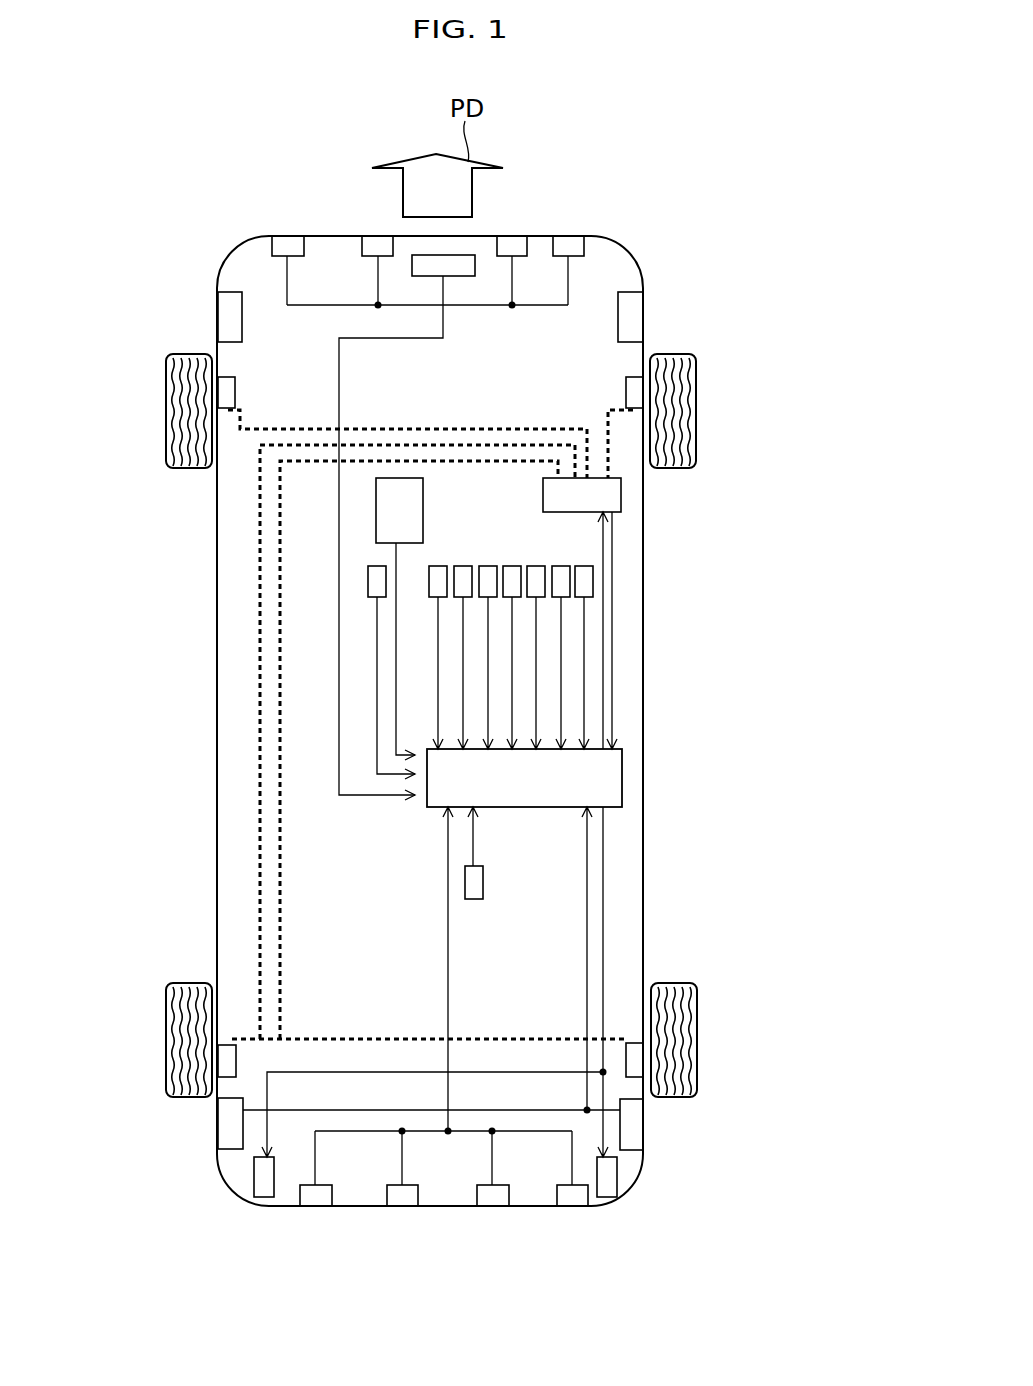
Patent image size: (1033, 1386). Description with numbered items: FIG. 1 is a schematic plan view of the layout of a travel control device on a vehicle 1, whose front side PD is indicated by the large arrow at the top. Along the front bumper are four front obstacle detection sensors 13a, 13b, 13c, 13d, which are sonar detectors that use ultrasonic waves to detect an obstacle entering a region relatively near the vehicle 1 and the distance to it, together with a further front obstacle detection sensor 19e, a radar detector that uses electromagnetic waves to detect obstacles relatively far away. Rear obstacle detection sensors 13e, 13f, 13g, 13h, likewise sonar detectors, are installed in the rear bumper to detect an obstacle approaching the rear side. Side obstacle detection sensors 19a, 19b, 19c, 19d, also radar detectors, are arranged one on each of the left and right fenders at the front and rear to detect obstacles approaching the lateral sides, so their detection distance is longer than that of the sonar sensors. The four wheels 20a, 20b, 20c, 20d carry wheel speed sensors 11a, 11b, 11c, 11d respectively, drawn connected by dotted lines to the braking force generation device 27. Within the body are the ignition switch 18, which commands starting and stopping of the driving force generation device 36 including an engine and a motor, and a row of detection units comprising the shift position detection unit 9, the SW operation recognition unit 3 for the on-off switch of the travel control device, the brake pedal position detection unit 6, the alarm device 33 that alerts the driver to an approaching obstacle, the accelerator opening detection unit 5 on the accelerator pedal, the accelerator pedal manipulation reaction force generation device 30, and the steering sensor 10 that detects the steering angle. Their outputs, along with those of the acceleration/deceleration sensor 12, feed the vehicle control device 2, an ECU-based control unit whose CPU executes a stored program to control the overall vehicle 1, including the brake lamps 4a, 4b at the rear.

The vehicle 1 is at (660, 113).
The vehicle control device 2 is at (622, 778).
The SW operation recognition unit 3 is at (463, 566).
The brake lamp 4a is at (258, 1185).
The brake lamp 4b is at (612, 1185).
The accelerator opening detection unit 5 is at (536, 566).
The brake pedal position detection unit 6 is at (488, 566).
The shift position detection unit 9 is at (438, 566).
The steering sensor 10 is at (584, 566).
The wheel speed sensor 11a is at (224, 380).
The wheel speed sensor 11b is at (634, 380).
The wheel speed sensor 11c is at (232, 1040).
The wheel speed sensor 11d is at (633, 1040).
The acceleration/deceleration sensor 12 is at (473, 890).
The front obstacle detection sensor 13a is at (288, 246).
The front obstacle detection sensor 13b is at (377, 246).
The front obstacle detection sensor 13c is at (513, 246).
The front obstacle detection sensor 13d is at (571, 246).
The rear obstacle detection sensor 13e is at (317, 1200).
The rear obstacle detection sensor 13f is at (401, 1200).
The rear obstacle detection sensor 13g is at (494, 1200).
The rear obstacle detection sensor 13h is at (570, 1200).
The ignition switch 18 is at (368, 582).
The side obstacle detection sensor 19a is at (225, 318).
The side obstacle detection sensor 19b is at (634, 313).
The side obstacle detection sensor 19c is at (222, 1130).
The side obstacle detection sensor 19d is at (639, 1124).
The front obstacle detection sensor 19e is at (467, 277).
The wheel 20a is at (168, 440).
The wheel 20b is at (697, 440).
The wheel 20c is at (168, 1008).
The wheel 20d is at (699, 1008).
The braking force generation device 27 is at (621, 497).
The accelerator pedal manipulation reaction force generation device 30 is at (560, 566).
The alarm device 33 is at (512, 566).
The driving force generation device 36 is at (423, 487).